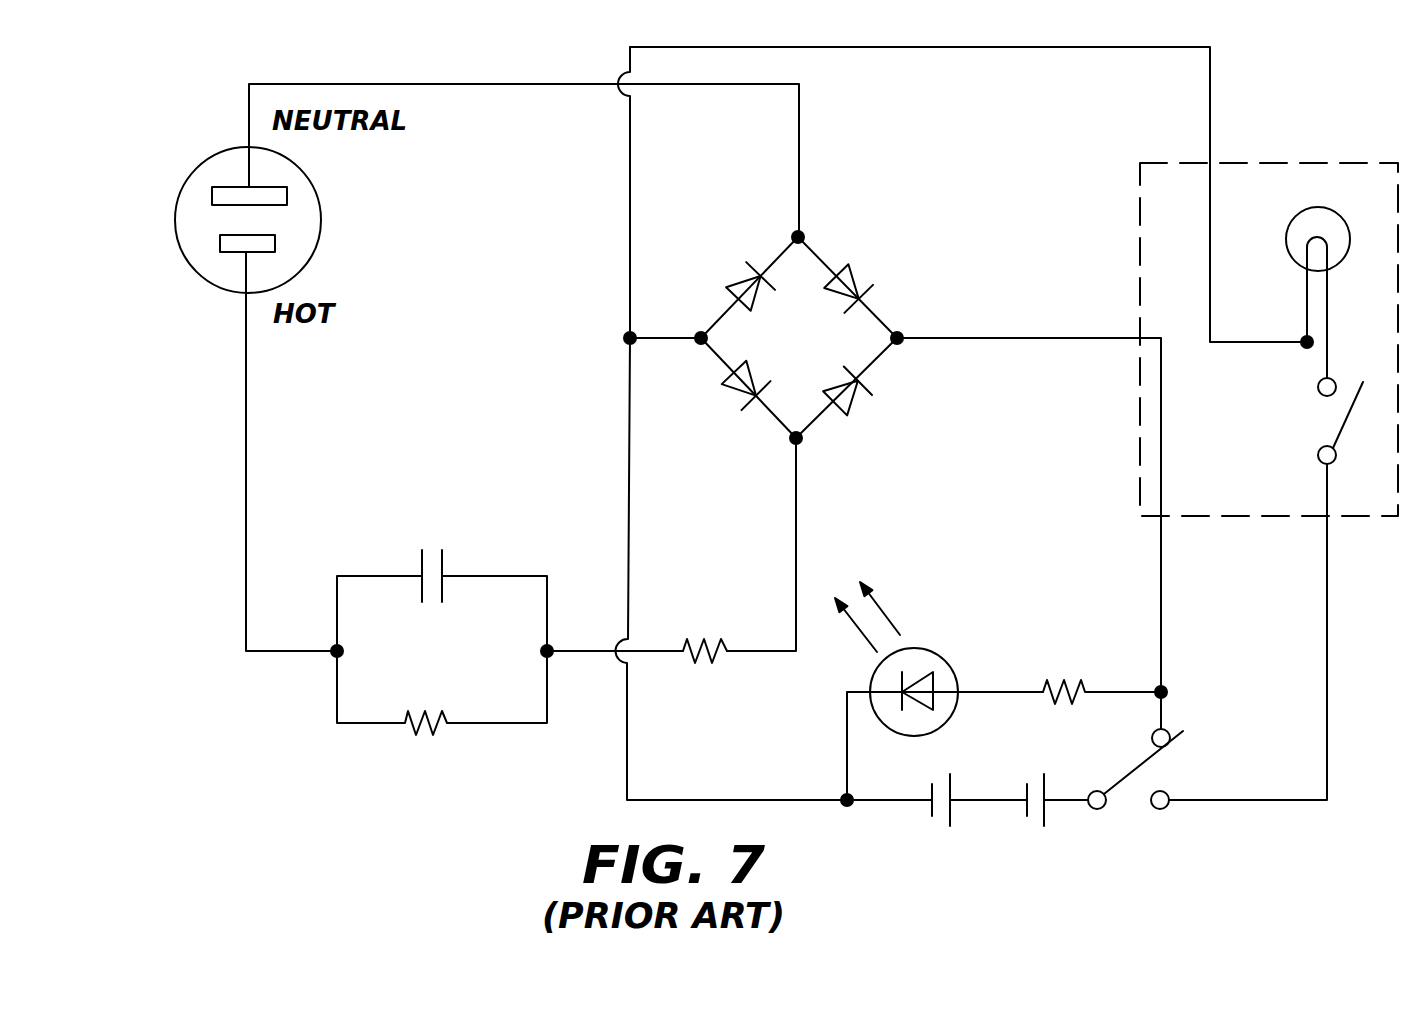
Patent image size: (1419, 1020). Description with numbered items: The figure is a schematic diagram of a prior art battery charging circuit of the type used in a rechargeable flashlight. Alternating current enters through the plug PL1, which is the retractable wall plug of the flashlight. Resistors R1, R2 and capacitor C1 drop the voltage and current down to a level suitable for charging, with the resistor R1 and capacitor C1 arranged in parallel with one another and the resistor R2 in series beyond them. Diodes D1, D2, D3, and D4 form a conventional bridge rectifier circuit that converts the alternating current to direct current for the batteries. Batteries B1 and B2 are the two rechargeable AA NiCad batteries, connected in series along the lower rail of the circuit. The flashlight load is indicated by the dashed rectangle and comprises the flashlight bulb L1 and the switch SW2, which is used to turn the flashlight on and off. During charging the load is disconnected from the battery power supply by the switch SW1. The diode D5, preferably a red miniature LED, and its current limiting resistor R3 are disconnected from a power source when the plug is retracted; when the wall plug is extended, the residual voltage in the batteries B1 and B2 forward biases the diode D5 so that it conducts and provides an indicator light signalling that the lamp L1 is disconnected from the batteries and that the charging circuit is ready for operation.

The plug PL1 is at (291, 220).
The capacitor C1 is at (442, 574).
The resistor R1 is at (442, 693).
The resistor R2 is at (705, 627).
The current limiting resistor R3 is at (1102, 666).
The diode D1 is at (743, 388).
The diode D2 is at (862, 388).
The diode D3 is at (874, 281).
The diode D4 is at (741, 281).
The diode D5 is at (939, 691).
The battery B1 is at (918, 821).
The battery B2 is at (1039, 821).
The switch SW1 is at (1163, 799).
The switch SW2 is at (1295, 421).
The flashlight bulb L1 is at (1299, 276).